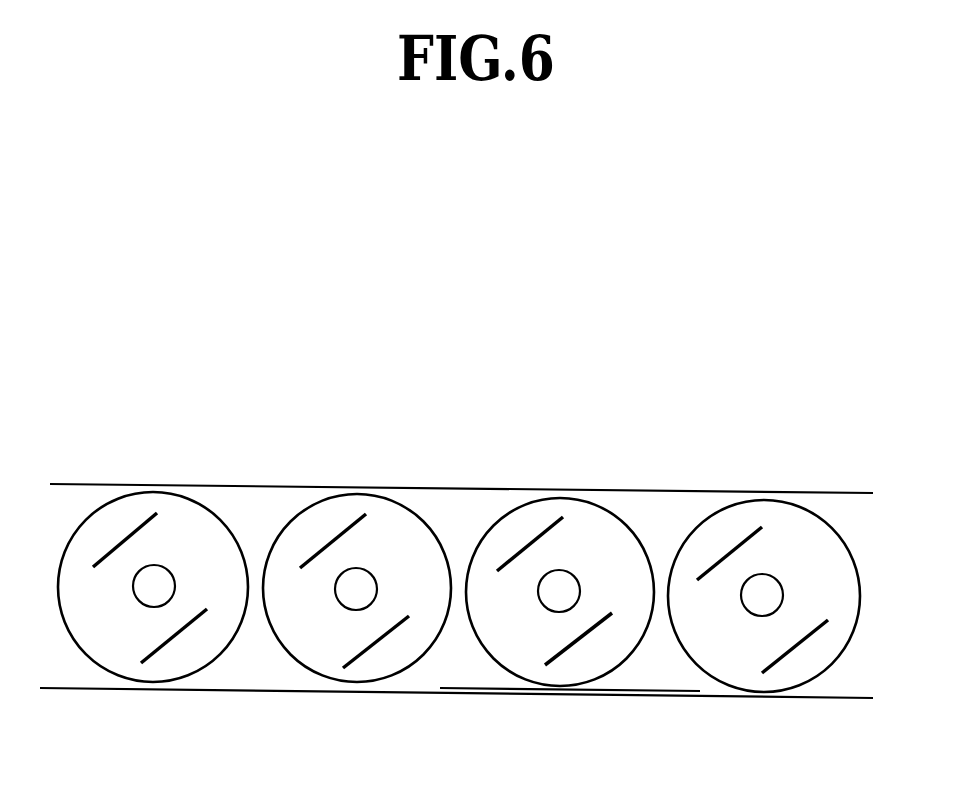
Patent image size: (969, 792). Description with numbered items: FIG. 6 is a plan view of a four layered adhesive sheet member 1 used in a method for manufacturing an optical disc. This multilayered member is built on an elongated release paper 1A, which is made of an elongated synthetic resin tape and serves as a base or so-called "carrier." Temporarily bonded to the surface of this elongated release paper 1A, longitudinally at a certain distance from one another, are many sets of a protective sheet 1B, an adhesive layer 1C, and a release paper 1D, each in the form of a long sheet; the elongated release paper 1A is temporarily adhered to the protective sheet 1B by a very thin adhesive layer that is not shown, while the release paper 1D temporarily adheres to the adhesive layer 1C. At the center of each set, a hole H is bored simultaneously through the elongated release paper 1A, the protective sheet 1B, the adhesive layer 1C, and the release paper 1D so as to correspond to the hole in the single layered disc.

The four layered adhesive sheet member 1 is at (760, 476).
The elongated release paper 1A is at (466, 678).
The protective sheet 1B is at (193, 660).
The adhesive layer 1C is at (357, 590).
The release paper 1D is at (503, 627).
The hole H is at (375, 583).